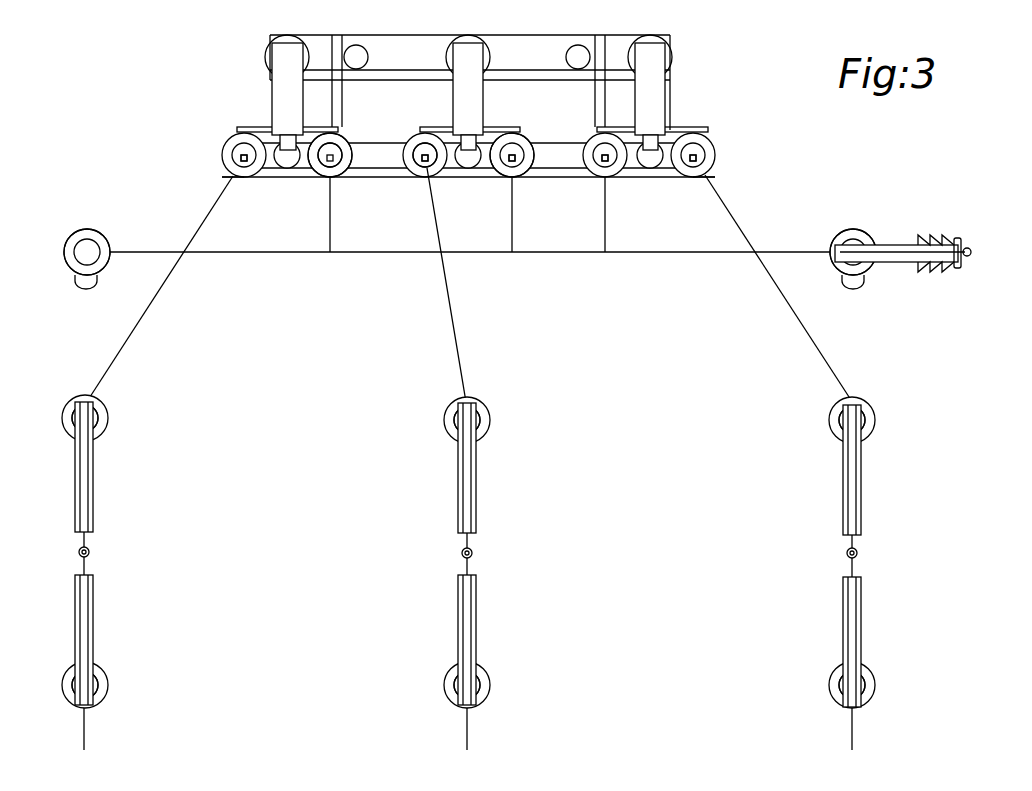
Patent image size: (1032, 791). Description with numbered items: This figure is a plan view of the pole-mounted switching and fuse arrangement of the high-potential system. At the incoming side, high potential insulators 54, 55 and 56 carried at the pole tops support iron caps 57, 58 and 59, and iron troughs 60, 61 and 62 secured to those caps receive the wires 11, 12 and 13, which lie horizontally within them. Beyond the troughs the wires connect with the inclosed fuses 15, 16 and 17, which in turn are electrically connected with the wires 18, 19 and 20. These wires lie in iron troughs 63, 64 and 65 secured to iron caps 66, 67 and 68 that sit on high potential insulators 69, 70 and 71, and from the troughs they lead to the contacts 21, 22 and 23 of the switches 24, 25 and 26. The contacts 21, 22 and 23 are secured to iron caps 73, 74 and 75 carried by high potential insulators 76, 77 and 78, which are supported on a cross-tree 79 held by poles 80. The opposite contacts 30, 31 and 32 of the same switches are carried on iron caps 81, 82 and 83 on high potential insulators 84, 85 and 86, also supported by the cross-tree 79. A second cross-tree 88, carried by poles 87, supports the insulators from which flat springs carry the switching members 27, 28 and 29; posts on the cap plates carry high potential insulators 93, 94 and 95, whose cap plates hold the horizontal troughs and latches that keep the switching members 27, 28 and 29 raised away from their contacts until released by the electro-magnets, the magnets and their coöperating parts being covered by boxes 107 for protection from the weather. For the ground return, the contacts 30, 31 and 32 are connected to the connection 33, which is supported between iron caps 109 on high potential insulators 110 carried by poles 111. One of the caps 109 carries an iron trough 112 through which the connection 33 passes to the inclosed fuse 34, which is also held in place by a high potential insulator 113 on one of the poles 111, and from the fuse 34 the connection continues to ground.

The wire 11 is at (87, 732).
The wire 12 is at (470, 732).
The wire 13 is at (855, 727).
The inclosed fuse 15 is at (92, 548).
The inclosed fuse 16 is at (473, 553).
The inclosed fuse 17 is at (858, 553).
The wire 18 is at (150, 328).
The wire 19 is at (458, 338).
The wire 20 is at (818, 340).
The contact 21 is at (241, 159).
The contact 22 is at (423, 160).
The contact 23 is at (698, 160).
The switch 24 is at (285, 127).
The switch 25 is at (462, 120).
The switch 26 is at (653, 132).
The switching member 27 is at (262, 127).
The switching member 28 is at (435, 128).
The switching member 29 is at (700, 132).
The contact 30 is at (330, 162).
The contact 31 is at (508, 167).
The contact 32 is at (600, 170).
The connection 33 is at (300, 253).
The inclosed fuse 34 is at (970, 256).
The high potential insulator 54 is at (108, 688).
The high potential insulator 55 is at (490, 688).
The high potential insulator 56 is at (875, 688).
The iron cap 57 is at (97, 680).
The iron cap 58 is at (480, 680).
The iron cap 59 is at (866, 680).
The iron trough 60 is at (93, 630).
The iron trough 61 is at (478, 630).
The iron trough 62 is at (863, 612).
The iron trough 63 is at (93, 478).
The iron trough 64 is at (478, 482).
The iron trough 65 is at (863, 480).
The iron cap 66 is at (98, 420).
The iron cap 67 is at (480, 420).
The iron cap 68 is at (866, 420).
The high potential insulator 69 is at (105, 405).
The high potential insulator 70 is at (483, 405).
The high potential insulator 71 is at (870, 400).
The iron cap 73 is at (234, 152).
The iron cap 74 is at (415, 152).
The iron cap 75 is at (707, 150).
The high potential insulator 76 is at (232, 172).
The high potential insulator 77 is at (427, 162).
The high potential insulator 78 is at (710, 173).
The cross-tree 79 is at (648, 173).
The pole 80 is at (285, 157).
The iron cap 81 is at (328, 160).
The iron cap 82 is at (515, 142).
The iron cap 83 is at (608, 170).
The high potential insulator 84 is at (345, 142).
The high potential insulator 85 is at (517, 170).
The high potential insulator 86 is at (583, 152).
The pole 87 is at (357, 55).
The cross-tree 88 is at (532, 42).
The high potential insulator 93 is at (270, 44).
The high potential insulator 94 is at (463, 43).
The high potential insulator 95 is at (673, 55).
The box 107 is at (285, 95).
The iron cap 109 is at (85, 248).
The high potential insulator 110 is at (68, 255).
The pole 111 is at (85, 285).
The iron trough 112 is at (885, 245).
The high potential insulator 113 is at (945, 235).